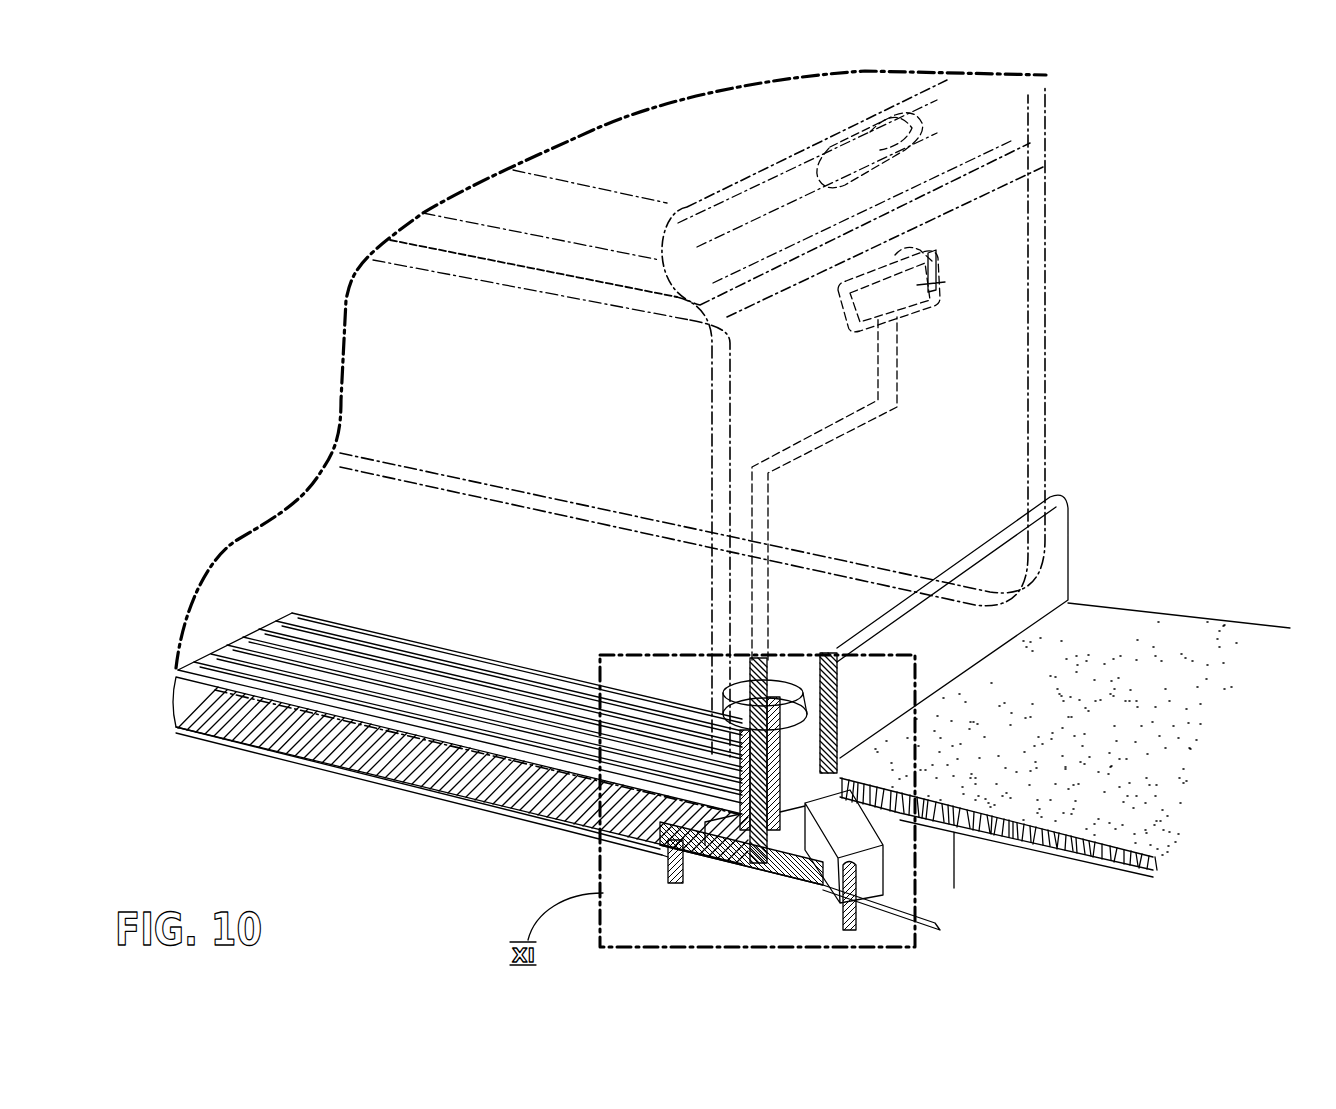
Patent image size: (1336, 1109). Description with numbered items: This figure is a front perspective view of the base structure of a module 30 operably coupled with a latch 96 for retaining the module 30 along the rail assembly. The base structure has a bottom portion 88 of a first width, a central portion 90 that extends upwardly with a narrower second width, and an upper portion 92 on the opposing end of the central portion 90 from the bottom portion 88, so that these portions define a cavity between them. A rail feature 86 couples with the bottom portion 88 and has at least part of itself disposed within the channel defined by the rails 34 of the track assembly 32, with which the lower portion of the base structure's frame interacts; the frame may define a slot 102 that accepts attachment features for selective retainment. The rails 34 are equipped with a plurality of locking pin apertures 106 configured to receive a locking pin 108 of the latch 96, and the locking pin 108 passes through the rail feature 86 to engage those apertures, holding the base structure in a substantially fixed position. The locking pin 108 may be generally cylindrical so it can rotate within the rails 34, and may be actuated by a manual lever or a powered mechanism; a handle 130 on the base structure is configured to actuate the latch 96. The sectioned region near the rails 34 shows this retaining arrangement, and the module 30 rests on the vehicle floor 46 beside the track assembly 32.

The slot 102 is at (620, 153).
The upper portion 92 is at (478, 284).
The central portion 90 is at (940, 357).
The latch 96 is at (935, 263).
The handle 130 is at (941, 284).
The module 30 is at (928, 417).
The rail feature 86 is at (789, 682).
The vehicle floor 46 is at (1170, 683).
The bottom portion 88 is at (426, 743).
The locking pin 108 is at (612, 820).
The track assembly 32 is at (652, 858).
The rails 34 is at (727, 795).
The locking pin apertures 106 is at (763, 855).